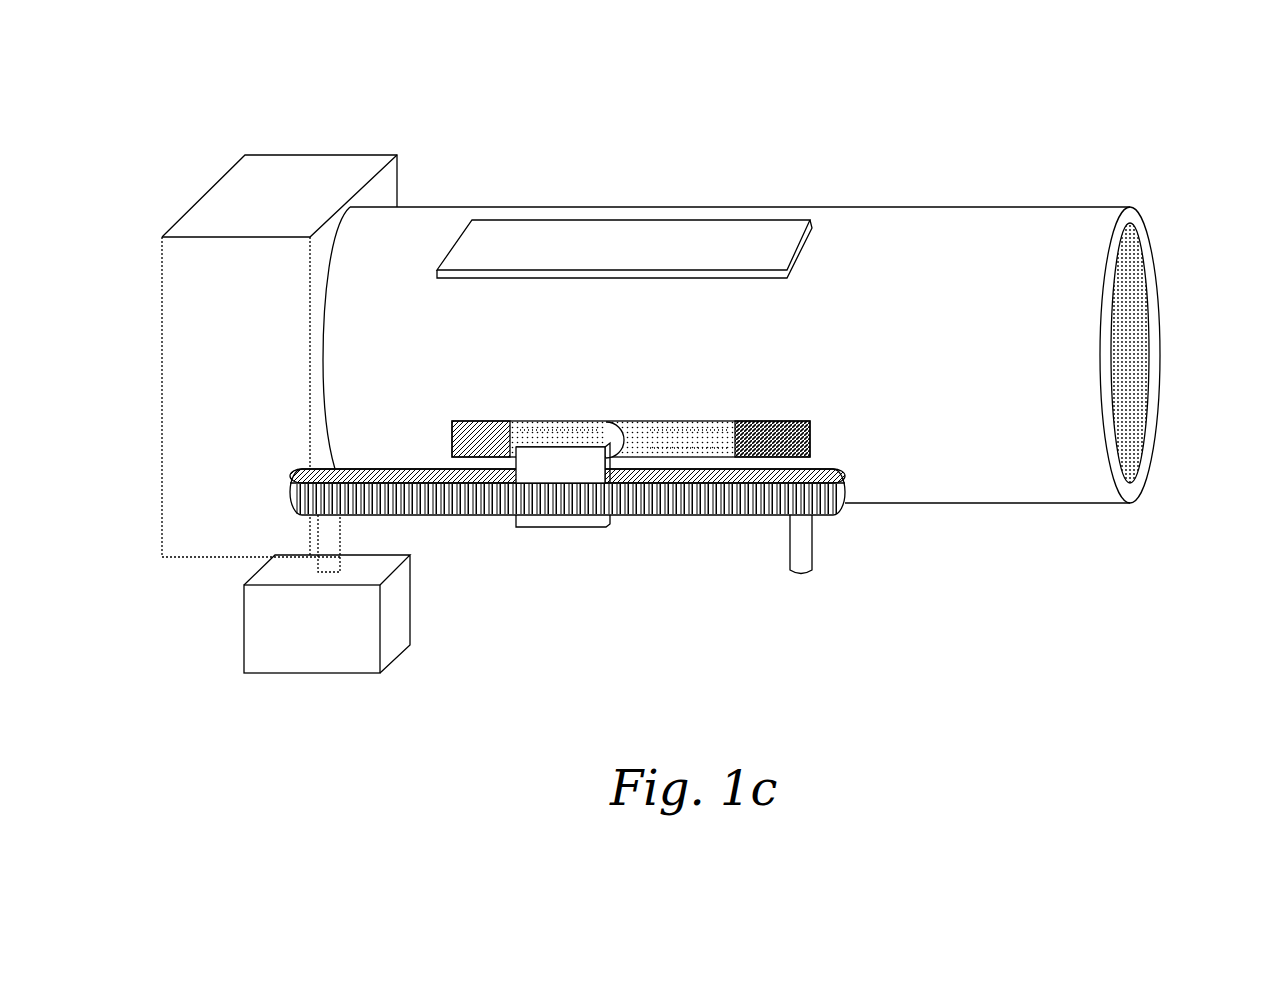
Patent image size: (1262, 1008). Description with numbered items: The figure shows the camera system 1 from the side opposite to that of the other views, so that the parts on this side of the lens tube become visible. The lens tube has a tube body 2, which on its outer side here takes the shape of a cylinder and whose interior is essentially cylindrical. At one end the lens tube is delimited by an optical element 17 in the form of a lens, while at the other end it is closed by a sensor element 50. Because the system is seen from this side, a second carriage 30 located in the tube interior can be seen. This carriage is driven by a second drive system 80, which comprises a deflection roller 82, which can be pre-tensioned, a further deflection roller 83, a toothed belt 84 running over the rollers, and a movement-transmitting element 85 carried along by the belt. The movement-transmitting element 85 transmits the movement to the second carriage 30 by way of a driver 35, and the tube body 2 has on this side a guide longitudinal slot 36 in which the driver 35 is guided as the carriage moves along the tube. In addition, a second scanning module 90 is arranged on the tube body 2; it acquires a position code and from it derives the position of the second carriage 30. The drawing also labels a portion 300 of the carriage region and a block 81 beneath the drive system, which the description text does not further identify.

The camera system 1 is at (780, 325).
The tube body 2 is at (1138, 215).
The optical element 17 is at (1128, 440).
The sensor element 50 is at (325, 170).
The second scanning module 90 is at (737, 248).
The second carriage 30 is at (640, 405).
The guide longitudinal slot 36 is at (495, 422).
The driver 35 is at (598, 440).
The strip middle portion 300 is at (678, 428).
The second drive system 80 is at (561, 579).
The motor 81 is at (357, 656).
The deflection roller 82 is at (294, 506).
The further deflection roller 83 is at (822, 484).
The toothed belt 84 is at (704, 510).
The movement-transmitting element 85 is at (596, 527).